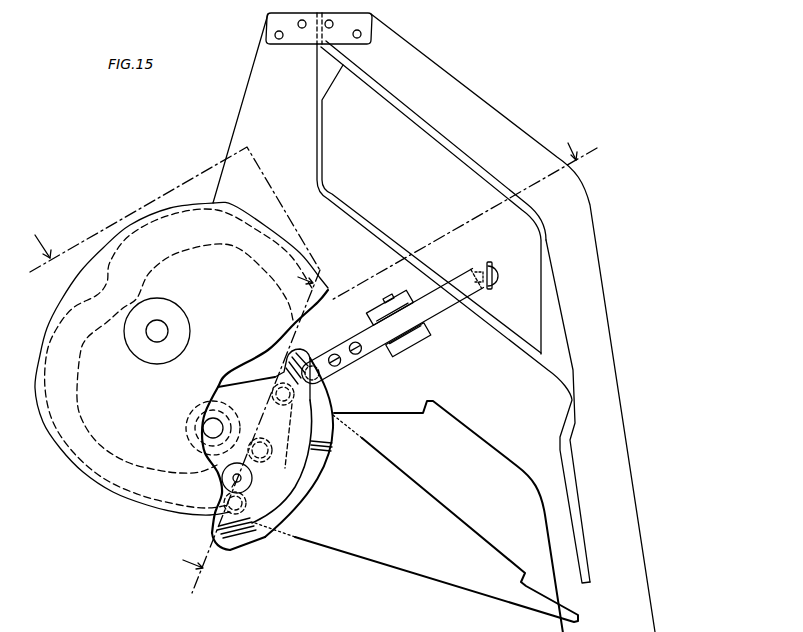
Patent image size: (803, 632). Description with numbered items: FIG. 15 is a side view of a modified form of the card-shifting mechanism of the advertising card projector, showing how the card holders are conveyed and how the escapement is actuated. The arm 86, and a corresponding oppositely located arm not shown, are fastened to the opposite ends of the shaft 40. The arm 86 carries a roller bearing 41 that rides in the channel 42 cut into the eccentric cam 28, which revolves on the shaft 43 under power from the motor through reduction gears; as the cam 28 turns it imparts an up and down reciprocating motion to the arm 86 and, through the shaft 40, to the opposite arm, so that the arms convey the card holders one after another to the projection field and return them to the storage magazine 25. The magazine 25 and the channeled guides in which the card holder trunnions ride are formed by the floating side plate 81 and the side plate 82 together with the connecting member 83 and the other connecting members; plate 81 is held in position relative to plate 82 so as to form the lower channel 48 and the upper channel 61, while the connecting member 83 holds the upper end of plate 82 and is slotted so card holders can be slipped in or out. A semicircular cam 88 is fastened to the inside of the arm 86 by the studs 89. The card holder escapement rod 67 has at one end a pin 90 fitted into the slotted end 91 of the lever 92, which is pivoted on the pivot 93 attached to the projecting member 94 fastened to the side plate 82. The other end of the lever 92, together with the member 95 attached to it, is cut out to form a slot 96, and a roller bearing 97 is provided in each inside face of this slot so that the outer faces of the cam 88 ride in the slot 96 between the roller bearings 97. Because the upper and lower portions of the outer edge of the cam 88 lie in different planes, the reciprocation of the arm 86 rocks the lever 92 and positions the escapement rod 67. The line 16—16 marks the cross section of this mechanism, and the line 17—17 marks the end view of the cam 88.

The section line 16— 16 is at (316, 215).
The section line 17— 17 is at (245, 431).
The storage magazine 25 is at (431, 209).
The eccentric cam 28 is at (123, 501).
The shaft 40 is at (203, 427).
The roller bearing 41 is at (222, 479).
The channel 42 is at (79, 396).
The shaft 43 is at (166, 330).
The lower channel 48 is at (392, 241).
The upper channel 61 is at (477, 167).
The card holder escapement rod 67 is at (503, 264).
The floating side plate 81 is at (542, 330).
The side plate 82 is at (232, 168).
The connecting member 83 is at (369, 34).
The arm 86 is at (375, 549).
The semicircular cam 88 is at (259, 537).
The studs 89 is at (271, 441).
The pin 90 is at (485, 262).
The slotted end 91 is at (477, 266).
The lever 92 is at (441, 312).
The pivot 93 is at (387, 296).
The projecting member 94 is at (367, 315).
The member 95 is at (364, 353).
The slot 96 is at (322, 371).
The roller bearings 97 is at (297, 365).